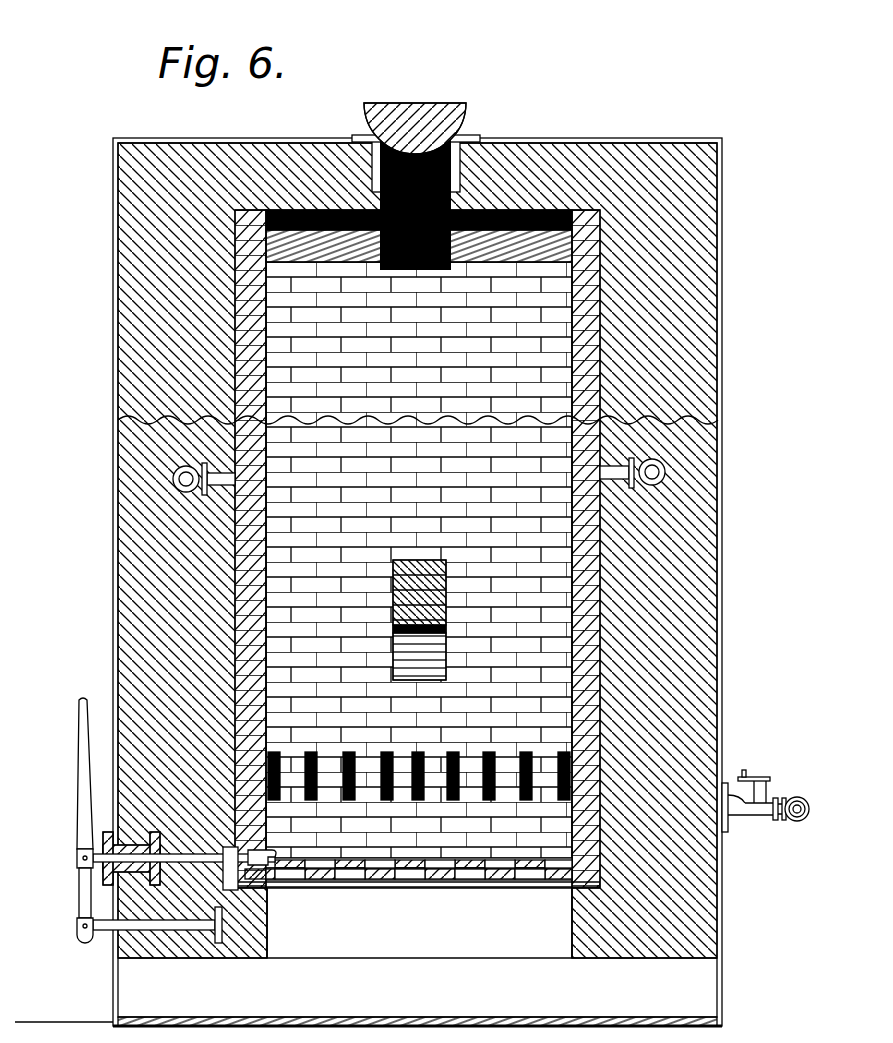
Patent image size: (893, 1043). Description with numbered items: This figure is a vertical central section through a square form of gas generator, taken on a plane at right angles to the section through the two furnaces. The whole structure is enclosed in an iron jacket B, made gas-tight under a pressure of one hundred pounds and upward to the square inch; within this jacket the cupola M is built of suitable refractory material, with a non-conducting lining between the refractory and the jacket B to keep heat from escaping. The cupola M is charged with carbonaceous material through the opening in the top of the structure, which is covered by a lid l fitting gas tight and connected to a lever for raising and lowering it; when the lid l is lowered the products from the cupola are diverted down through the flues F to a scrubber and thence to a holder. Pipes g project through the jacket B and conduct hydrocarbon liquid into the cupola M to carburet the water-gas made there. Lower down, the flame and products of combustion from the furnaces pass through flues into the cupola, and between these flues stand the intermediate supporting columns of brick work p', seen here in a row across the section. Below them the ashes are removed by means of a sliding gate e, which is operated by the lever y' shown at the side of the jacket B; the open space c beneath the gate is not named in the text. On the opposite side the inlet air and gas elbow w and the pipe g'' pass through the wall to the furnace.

The iron jacket B is at (113, 570).
The cupola M is at (540, 343).
The flues F is at (550, 167).
The lid l is at (415, 130).
The pipes g is at (413, 496).
The supporting columns of brick work p' is at (419, 776).
The sliding gate e is at (425, 866).
The ash pit / chamber c is at (419, 923).
The lever y' is at (158, 820).
The elbow w is at (745, 812).
The pipe g'' is at (791, 826).